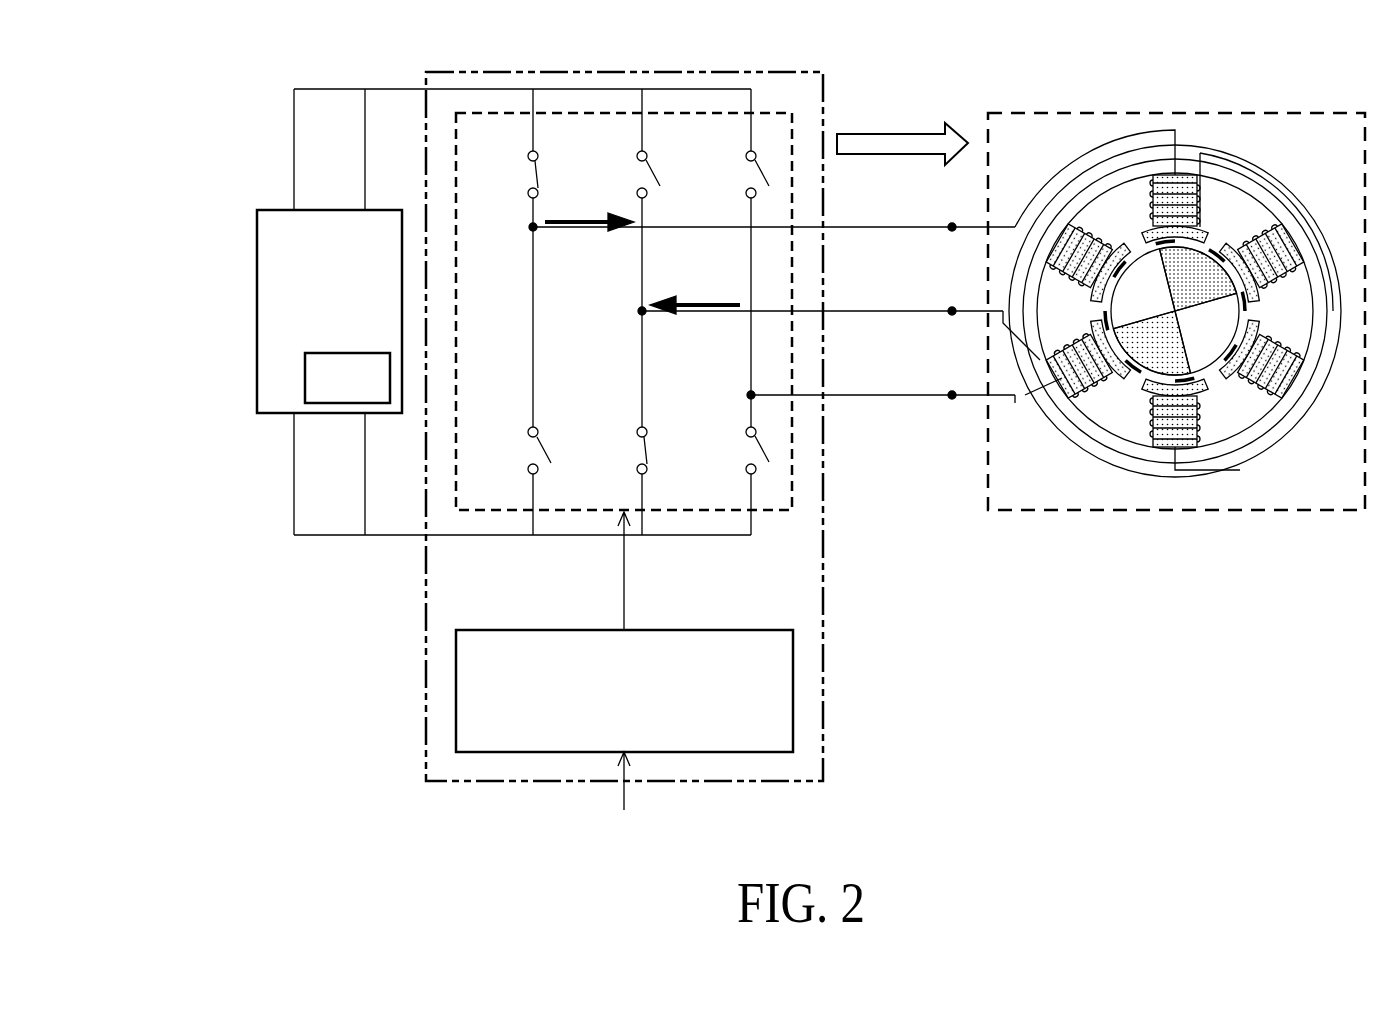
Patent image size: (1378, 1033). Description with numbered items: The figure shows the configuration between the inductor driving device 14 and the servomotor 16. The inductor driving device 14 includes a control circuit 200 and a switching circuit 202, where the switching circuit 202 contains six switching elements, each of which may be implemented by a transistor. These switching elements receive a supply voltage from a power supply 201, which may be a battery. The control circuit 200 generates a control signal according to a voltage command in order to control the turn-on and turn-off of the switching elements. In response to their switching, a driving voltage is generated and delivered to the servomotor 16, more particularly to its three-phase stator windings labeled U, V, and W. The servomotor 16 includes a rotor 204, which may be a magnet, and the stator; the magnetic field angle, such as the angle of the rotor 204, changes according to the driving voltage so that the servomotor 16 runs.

The inductor driving device 14 is at (622, 71).
The servomotor 16 is at (1268, 113).
The control circuit 200 is at (456, 688).
The power supply 201 is at (257, 310).
The switching circuit 202 is at (773, 512).
The rotor 204 is at (1138, 378).